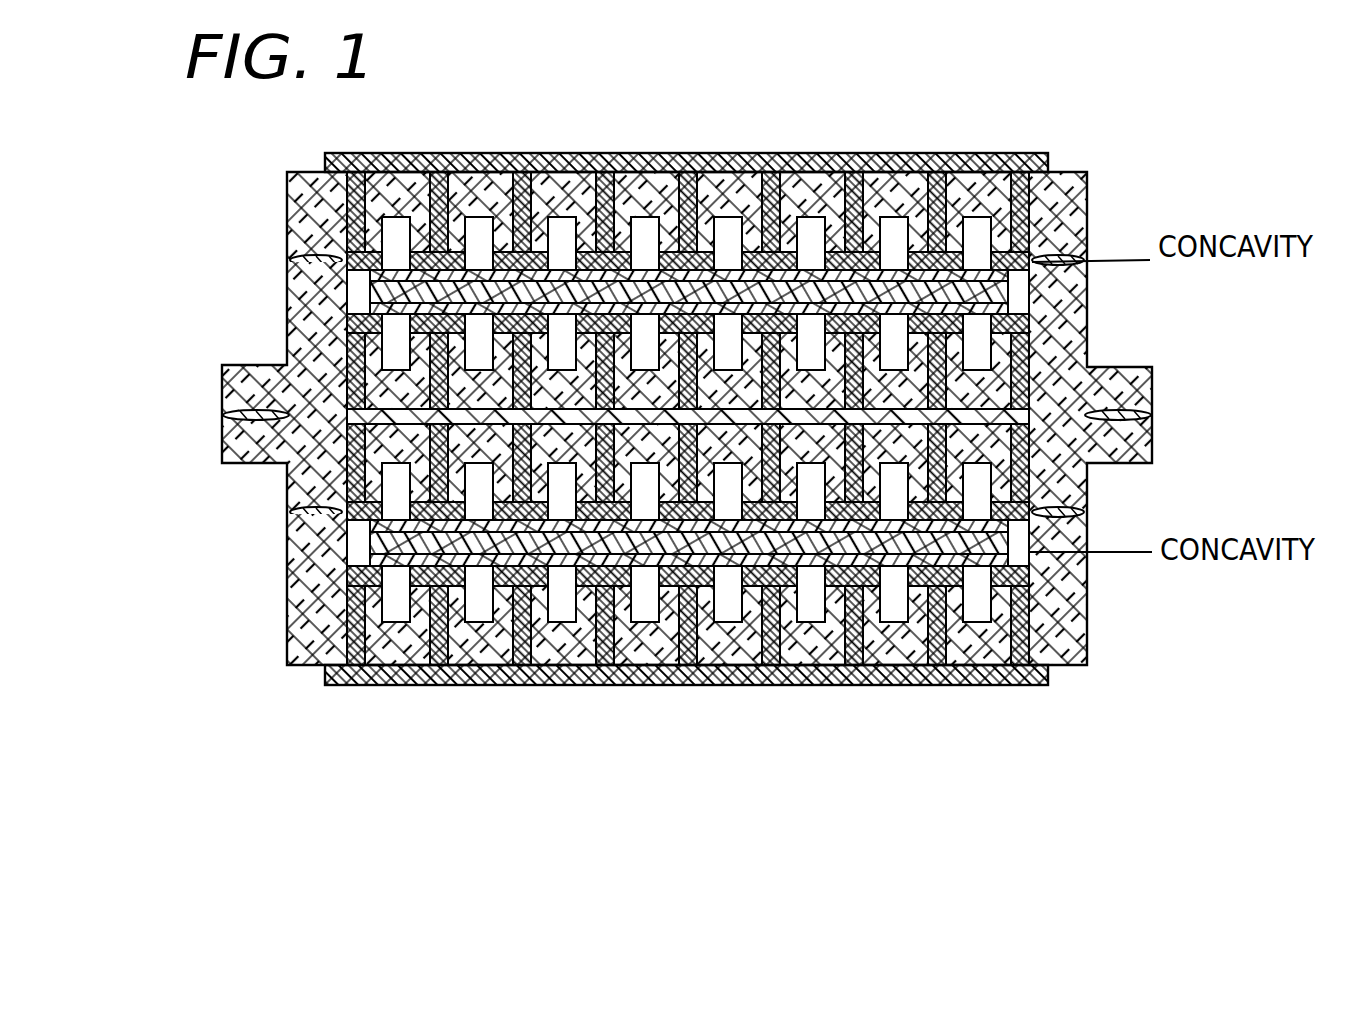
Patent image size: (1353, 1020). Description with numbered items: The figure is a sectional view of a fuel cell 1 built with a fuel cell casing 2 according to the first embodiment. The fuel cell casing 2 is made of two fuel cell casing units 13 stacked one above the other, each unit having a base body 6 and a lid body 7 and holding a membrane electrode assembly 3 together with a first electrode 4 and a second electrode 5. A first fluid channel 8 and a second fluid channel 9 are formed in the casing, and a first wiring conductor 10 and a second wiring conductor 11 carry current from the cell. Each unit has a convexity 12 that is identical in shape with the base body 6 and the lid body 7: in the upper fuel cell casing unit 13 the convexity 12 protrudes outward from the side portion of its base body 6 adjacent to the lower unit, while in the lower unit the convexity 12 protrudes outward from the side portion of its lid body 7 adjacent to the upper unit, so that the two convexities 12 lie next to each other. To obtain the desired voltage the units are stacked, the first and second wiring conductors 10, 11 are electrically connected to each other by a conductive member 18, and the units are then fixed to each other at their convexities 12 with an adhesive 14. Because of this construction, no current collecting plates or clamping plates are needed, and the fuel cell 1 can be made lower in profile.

The fuel cell 1 is at (1108, 142).
The fuel cell casing 2 is at (137, 230).
The membrane electrode assembly 3 is at (990, 296).
The first electrode 4 is at (810, 309).
The second electrode 5 is at (899, 276).
The base body 6 is at (305, 297).
The lid body 7 is at (305, 204).
The first fluid channel 8 is at (398, 349).
The second fluid channel 9 is at (400, 236).
The first wiring conductor 10 is at (1066, 365).
The second wiring conductor 11 is at (1030, 255).
The convexity 12 is at (253, 390).
The fuel cell casing unit 13 is at (215, 175).
The adhesive 14 is at (1130, 418).
The conductive member 18 is at (922, 401).